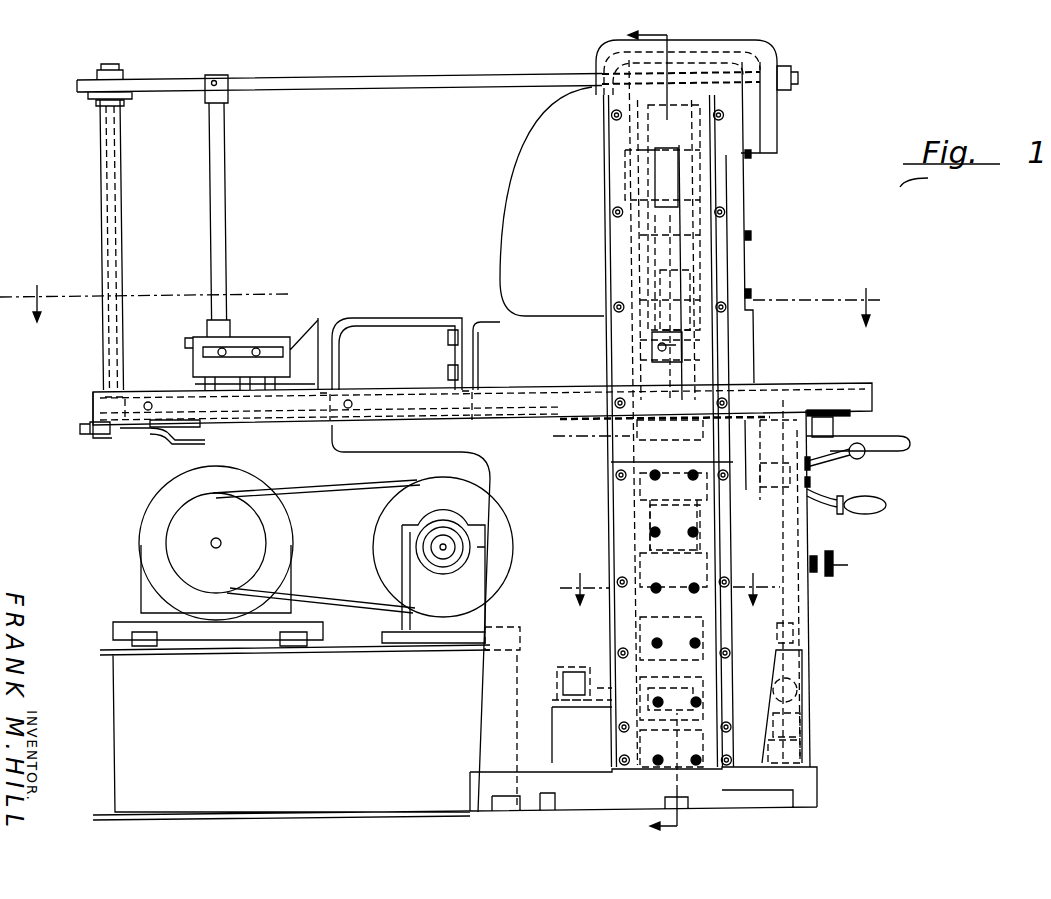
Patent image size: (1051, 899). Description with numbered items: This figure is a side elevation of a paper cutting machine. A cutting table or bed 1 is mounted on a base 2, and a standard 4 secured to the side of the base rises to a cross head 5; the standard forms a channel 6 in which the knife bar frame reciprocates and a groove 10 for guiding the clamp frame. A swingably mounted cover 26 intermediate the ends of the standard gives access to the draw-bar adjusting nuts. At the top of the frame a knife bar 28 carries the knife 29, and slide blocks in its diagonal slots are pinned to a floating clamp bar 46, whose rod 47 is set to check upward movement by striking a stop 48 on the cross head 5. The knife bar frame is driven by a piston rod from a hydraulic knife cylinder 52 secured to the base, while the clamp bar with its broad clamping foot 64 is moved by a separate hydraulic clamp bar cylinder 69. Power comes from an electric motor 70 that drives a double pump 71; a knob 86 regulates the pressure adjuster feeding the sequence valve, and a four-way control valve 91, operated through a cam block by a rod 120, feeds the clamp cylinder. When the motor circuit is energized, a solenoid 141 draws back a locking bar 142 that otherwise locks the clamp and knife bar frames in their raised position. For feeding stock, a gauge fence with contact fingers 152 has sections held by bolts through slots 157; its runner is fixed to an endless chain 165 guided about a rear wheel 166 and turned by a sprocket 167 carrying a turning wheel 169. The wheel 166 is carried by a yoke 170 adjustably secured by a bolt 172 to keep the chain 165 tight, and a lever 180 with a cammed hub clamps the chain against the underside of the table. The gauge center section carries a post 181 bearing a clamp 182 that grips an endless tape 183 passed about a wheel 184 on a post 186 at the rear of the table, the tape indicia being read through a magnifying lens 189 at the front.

The cutting table or bed 1 is at (838, 378).
The base 2 is at (812, 656).
The standard 4 is at (452, 305).
The cross head 5 is at (762, 39).
The channel 6 is at (631, 436).
The groove 10 is at (657, 590).
The cover 26 is at (603, 458).
The knife bar 28 is at (672, 228).
The knife 29 is at (655, 312).
The floating clamp bar 46 is at (615, 203).
The rod 47 is at (633, 173).
The stop 48 is at (600, 154).
The hydraulic cylinder (knife cylinder) 52 is at (727, 515).
The clamping foot 64 is at (618, 333).
The hydraulic cylinder (clamp bar cylinder) 69 is at (640, 517).
The electric motor 70 is at (140, 525).
The pump 71 is at (378, 521).
The knob 86 is at (848, 567).
The four-way control valve 91 is at (778, 673).
The rod 120 is at (830, 462).
The solenoid 141 is at (567, 672).
The locking bar 142 is at (704, 706).
The contact finger 152 is at (321, 328).
The slot 157 is at (240, 362).
The endless chain 165 is at (392, 430).
The wheel 166 is at (188, 441).
The sprocket 167 is at (852, 424).
The turning wheel 169 is at (903, 449).
The yoke 170 is at (170, 441).
The bolt 172 is at (125, 428).
The lever 180 is at (864, 513).
The post 181 is at (226, 216).
The clamp 182 is at (227, 80).
The endless tape 183 is at (393, 87).
The wheel 184 is at (80, 96).
The post 186 is at (100, 192).
The magnifying lens 189 is at (797, 82).